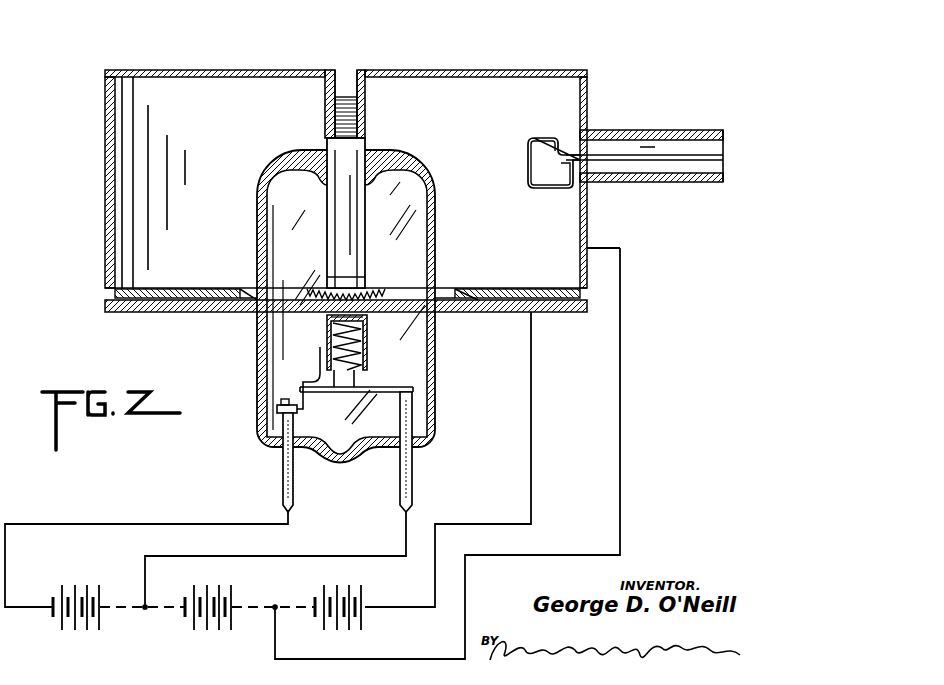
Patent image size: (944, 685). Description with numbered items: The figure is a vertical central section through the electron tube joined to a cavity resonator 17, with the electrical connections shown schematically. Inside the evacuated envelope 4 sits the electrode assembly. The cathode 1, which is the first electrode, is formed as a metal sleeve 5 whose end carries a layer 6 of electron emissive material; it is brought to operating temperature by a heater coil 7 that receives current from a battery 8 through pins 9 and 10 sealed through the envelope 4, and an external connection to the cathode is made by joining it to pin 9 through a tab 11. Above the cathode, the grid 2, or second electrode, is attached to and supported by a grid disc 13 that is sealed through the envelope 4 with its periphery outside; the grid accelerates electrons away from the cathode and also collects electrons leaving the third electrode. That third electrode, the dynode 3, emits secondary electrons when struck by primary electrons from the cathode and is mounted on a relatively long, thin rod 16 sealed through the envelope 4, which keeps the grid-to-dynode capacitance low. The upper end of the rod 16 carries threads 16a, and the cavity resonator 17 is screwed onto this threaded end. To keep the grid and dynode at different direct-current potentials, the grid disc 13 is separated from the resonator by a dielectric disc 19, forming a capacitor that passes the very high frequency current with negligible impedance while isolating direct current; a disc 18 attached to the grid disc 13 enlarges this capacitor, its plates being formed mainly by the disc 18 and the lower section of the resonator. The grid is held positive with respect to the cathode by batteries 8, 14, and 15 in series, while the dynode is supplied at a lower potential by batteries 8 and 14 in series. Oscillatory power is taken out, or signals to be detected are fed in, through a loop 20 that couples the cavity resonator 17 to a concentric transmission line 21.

The cathode 1 is at (368, 327).
The grid 2 is at (384, 293).
The dynode 3 is at (332, 278).
The evacuated envelope 4 is at (437, 378).
The metal sleeve 5 is at (320, 350).
The layer of electron emissive material 6 is at (364, 318).
The heater coil 7 is at (368, 350).
The battery 8 is at (95, 642).
The pin 9 is at (283, 484).
The pin 10 is at (412, 486).
The tab 11 is at (305, 388).
The grid disc 13 is at (445, 290).
The battery 14 is at (196, 637).
The battery 15 is at (333, 637).
The dynode rod 16 is at (365, 231).
The threads 16a is at (352, 96).
The cavity resonator 17 is at (482, 70).
The disc 18 is at (541, 312).
The dielectric disc 19 is at (603, 277).
The loop 20 is at (545, 138).
The concentric transmission line 21 is at (653, 127).